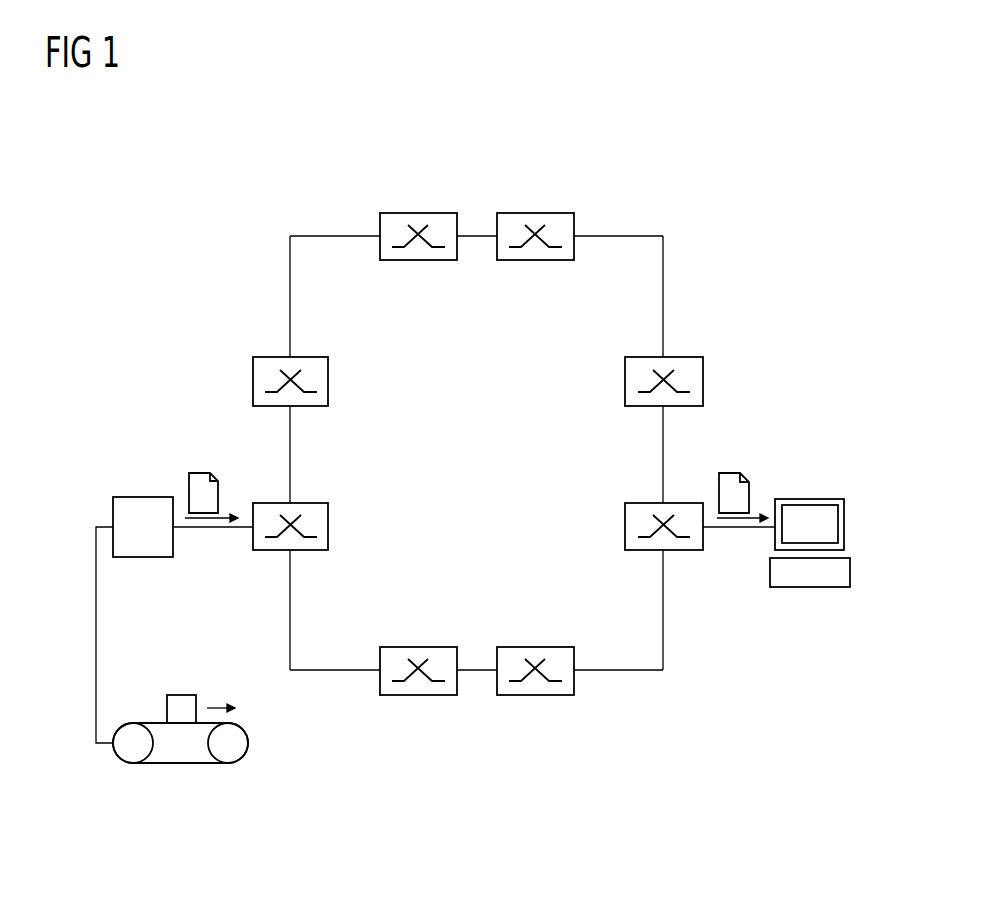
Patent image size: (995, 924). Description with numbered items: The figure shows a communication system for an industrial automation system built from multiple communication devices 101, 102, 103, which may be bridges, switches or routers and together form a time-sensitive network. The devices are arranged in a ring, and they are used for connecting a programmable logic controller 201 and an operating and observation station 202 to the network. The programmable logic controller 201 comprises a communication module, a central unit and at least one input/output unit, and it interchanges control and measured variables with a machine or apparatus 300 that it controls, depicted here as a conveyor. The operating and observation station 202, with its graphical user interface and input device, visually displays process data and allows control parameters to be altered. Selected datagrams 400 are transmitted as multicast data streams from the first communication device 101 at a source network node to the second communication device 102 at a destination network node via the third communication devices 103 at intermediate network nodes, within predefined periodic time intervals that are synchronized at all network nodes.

The first communication device 101 is at (328, 536).
The second communication device 102 is at (625, 535).
The third communication device 103 is at (420, 213).
The programmable logic controller 201 is at (145, 557).
The operating and observation station 202 is at (812, 587).
The machine or apparatus 300 is at (185, 763).
The datagram 400 is at (200, 473).